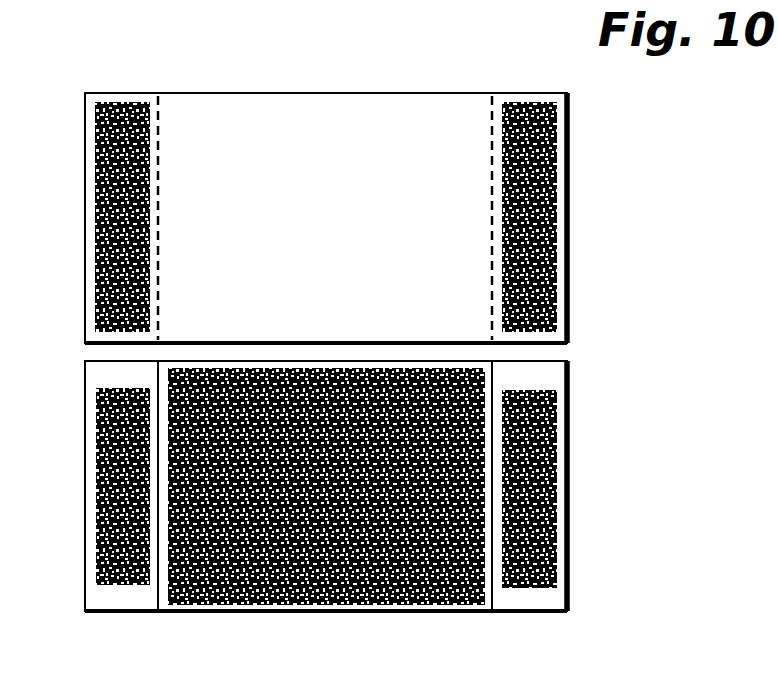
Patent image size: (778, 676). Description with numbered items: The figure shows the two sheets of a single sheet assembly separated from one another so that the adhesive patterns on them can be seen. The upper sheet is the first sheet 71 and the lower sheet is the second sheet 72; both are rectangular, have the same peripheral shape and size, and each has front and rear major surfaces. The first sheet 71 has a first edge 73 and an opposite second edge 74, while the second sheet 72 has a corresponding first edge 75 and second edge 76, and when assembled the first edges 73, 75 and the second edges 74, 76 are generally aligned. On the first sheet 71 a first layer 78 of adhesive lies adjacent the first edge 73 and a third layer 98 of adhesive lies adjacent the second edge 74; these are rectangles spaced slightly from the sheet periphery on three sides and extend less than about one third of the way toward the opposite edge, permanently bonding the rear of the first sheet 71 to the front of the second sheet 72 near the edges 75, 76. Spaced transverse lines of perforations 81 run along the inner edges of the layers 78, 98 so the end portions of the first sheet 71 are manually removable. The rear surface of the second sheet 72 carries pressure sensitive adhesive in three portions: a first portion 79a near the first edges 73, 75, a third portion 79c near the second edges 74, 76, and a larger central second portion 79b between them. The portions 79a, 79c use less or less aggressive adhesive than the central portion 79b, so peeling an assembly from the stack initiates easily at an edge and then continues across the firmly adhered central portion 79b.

The first sheet 71 is at (236, 90).
The second sheet 72 is at (525, 616).
The first edge of first sheet 73 is at (84, 267).
The second edge of first sheet 74 is at (570, 271).
The first edge of second sheet 75 is at (84, 417).
The second edge of second sheet 76 is at (570, 422).
The first layer of adhesive 78 is at (95, 181).
The first portion of second layer of pressure sensitive adhesive 79a is at (96, 495).
The second central portion of second layer of pressure sensitive adhesive 79b is at (355, 612).
The third portion of second layer of pressure sensitive adhesive 79c is at (557, 505).
The transverse lines of perforations 81 is at (162, 119).
The third layer of adhesive 98 is at (557, 201).